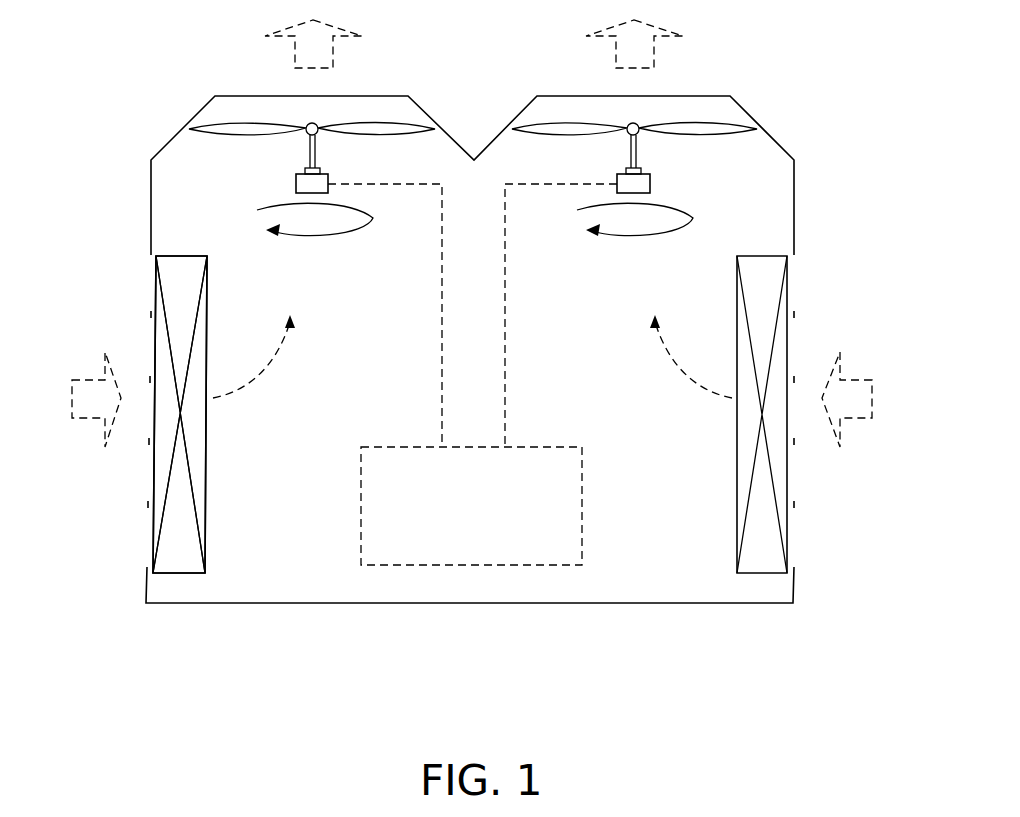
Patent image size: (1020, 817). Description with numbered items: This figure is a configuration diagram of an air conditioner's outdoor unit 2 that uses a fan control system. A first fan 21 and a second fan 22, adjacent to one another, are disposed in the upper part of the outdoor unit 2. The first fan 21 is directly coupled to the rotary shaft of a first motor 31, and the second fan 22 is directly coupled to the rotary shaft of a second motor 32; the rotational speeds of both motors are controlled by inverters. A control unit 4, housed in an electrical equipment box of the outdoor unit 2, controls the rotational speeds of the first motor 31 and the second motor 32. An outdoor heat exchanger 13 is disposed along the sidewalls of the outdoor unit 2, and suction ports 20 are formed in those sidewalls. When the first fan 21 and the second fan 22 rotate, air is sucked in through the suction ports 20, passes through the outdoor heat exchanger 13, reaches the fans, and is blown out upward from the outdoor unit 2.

The air conditioner's outdoor unit 2 is at (164, 58).
The first fan 21 is at (205, 128).
The second fan 22 is at (743, 127).
The first motor 31 is at (298, 182).
The second motor 32 is at (640, 182).
The suction ports 20 is at (146, 283).
The outdoor heat exchanger 13 is at (178, 551).
The control unit 4 is at (507, 558).